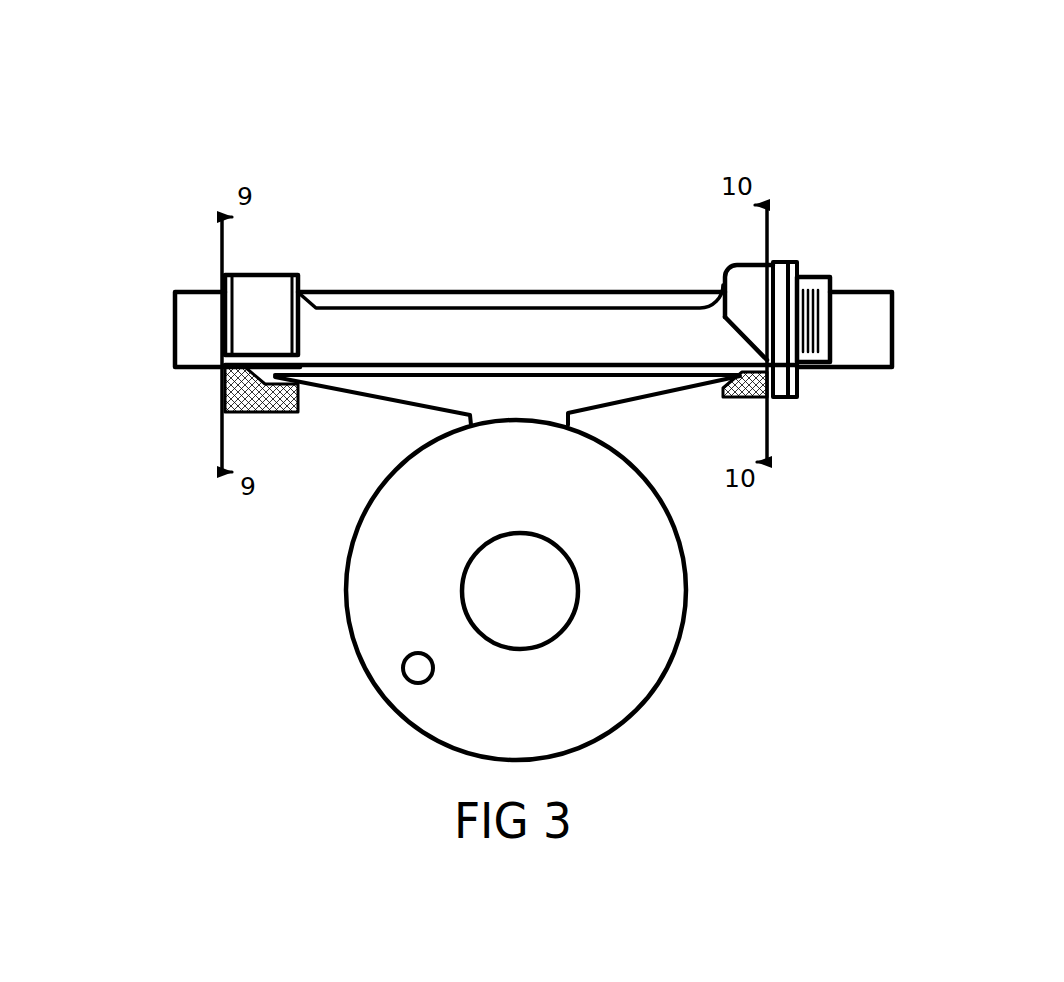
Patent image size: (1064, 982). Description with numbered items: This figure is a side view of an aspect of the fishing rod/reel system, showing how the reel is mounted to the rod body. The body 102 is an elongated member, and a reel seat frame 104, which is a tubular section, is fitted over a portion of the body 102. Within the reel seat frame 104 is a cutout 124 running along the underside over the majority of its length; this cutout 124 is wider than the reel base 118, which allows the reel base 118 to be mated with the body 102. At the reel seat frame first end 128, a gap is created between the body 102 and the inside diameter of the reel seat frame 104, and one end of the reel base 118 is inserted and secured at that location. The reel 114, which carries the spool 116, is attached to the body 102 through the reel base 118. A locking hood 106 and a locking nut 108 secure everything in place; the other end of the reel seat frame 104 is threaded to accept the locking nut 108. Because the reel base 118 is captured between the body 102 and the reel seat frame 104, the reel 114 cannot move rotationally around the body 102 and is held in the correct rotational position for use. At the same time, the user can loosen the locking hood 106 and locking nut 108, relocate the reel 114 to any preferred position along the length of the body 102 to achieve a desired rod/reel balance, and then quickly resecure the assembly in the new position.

The body 102 is at (172, 290).
The reel seat frame 104 is at (540, 332).
The locking hood 106 is at (735, 265).
The locking nut 108 is at (800, 402).
The reel 114 is at (612, 651).
The spool 116 is at (343, 632).
The reel base 118 is at (400, 405).
The cutout 124 is at (403, 307).
The reel seat frame first end 128 is at (258, 272).